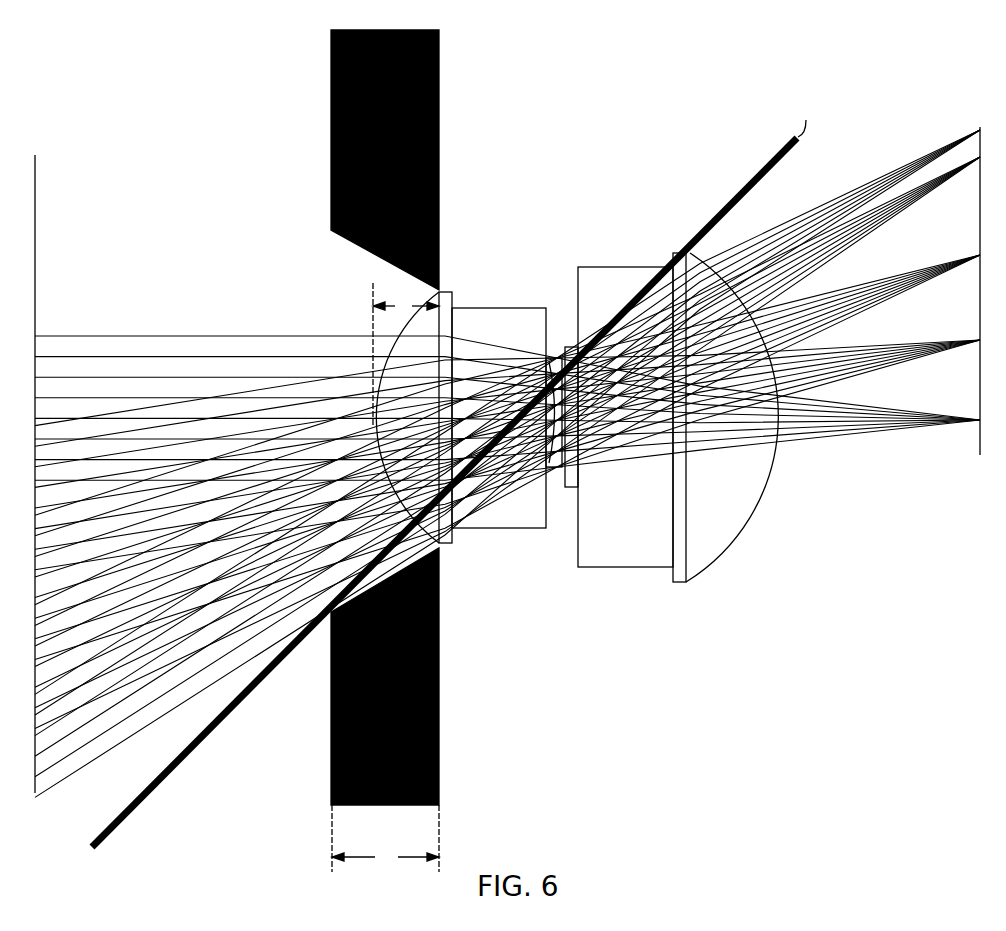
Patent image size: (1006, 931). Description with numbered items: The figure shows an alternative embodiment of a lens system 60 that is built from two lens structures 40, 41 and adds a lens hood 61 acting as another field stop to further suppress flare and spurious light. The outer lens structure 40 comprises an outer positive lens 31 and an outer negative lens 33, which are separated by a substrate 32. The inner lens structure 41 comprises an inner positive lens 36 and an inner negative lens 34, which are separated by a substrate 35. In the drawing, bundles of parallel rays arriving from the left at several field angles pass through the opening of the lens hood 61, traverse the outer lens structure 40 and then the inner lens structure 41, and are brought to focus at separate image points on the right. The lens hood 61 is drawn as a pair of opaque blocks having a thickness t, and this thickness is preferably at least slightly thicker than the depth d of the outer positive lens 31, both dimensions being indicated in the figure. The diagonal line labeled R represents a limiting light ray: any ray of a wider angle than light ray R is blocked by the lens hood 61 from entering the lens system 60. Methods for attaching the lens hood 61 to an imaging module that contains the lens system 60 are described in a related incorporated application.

The outer positive lens 31 is at (441, 336).
The substrate 32 is at (515, 336).
The outer negative lens 33 is at (553, 478).
The inner negative lens 34 is at (566, 347).
The substrate 35 is at (641, 528).
The inner positive lens 36 is at (736, 528).
The outer lens structure 40 is at (477, 351).
The inner lens structure 41 is at (734, 428).
The lens system 60 is at (454, 444).
The lens hood 61 is at (459, 451).